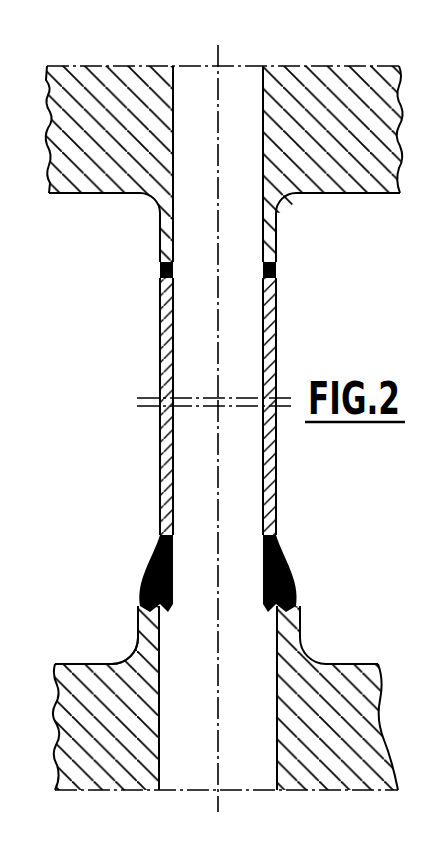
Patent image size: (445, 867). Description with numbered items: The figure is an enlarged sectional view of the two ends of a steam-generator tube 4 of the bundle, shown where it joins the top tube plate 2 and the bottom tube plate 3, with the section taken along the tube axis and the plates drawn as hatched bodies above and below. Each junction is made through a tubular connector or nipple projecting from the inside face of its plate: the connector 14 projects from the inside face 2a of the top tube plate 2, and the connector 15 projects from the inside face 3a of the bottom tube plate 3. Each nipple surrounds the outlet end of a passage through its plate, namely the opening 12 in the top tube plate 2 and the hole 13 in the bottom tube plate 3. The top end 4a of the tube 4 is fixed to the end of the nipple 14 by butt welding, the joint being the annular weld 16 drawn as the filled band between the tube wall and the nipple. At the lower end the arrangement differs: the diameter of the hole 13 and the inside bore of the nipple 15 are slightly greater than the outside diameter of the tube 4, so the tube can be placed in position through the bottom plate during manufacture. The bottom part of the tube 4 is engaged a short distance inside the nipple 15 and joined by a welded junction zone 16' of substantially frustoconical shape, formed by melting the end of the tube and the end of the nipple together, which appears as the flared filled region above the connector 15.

The top tube plate 2 is at (372, 82).
The inside face of top tube plate 2a is at (368, 195).
The bottom tube plate 3 is at (348, 732).
The inside face of bottom tube plate 3a is at (348, 665).
The tube 4 is at (277, 503).
The top end of tube 4a is at (277, 346).
The opening 12 is at (217, 88).
The hole 13 is at (259, 774).
The connector (nipple) 14 is at (162, 247).
The connector (nipple) 15 is at (140, 632).
The annular weld 16 is at (296, 261).
The welded junction zone 16' is at (243, 573).